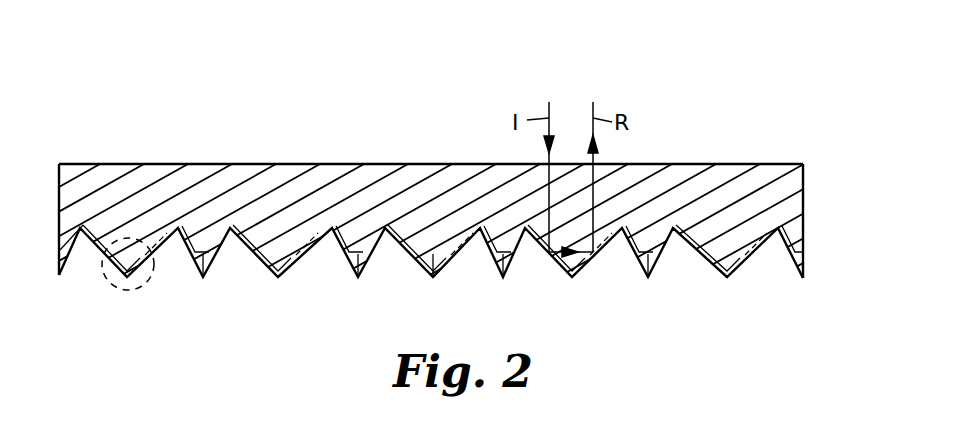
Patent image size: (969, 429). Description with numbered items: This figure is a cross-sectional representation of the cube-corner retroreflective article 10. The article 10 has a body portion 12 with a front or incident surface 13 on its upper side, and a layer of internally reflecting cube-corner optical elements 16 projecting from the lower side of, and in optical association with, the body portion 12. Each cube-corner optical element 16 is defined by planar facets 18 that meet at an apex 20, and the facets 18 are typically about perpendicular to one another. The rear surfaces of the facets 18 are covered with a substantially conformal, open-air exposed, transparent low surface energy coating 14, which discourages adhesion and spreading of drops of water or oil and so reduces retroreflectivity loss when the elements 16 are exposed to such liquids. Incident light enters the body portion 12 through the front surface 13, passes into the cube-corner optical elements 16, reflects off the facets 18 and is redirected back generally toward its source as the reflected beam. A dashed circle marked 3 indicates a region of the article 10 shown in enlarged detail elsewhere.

The retroreflective article 10 is at (484, 195).
The body portion 12 is at (484, 213).
The front or incident surface 13 is at (423, 163).
The low surface energy coating 14 is at (789, 255).
The cube-corner optical elements 16 is at (283, 255).
The planar facets 18 is at (436, 278).
The apex 20 is at (572, 275).
The detail region shown in FIG. 3 is at (140, 288).